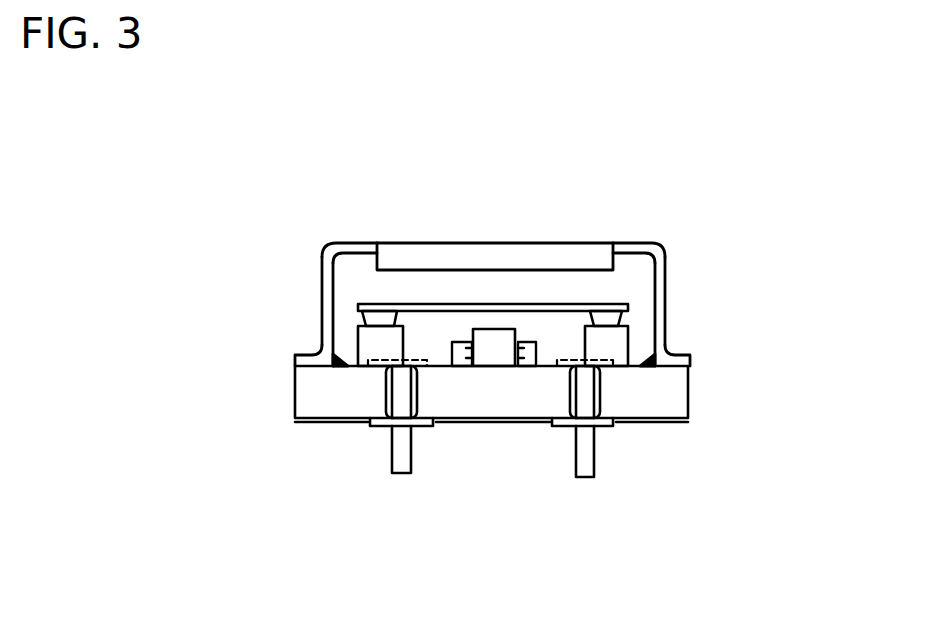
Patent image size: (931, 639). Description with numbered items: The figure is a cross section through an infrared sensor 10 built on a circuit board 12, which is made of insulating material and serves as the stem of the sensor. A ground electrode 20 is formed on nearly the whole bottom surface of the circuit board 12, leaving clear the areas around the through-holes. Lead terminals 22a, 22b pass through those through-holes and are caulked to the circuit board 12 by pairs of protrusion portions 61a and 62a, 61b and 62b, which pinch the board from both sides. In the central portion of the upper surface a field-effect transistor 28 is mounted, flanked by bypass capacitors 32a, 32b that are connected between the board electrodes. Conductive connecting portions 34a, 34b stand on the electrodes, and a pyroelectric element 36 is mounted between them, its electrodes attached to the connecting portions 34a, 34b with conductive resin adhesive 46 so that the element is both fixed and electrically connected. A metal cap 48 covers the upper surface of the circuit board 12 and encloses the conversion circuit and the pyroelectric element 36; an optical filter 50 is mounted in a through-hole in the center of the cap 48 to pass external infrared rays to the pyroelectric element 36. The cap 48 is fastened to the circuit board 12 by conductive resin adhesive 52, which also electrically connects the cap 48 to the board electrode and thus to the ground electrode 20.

The infrared sensor 10 is at (240, 142).
The circuit board 12 is at (688, 390).
The ground electrode 20 is at (313, 421).
The lead terminal 22a is at (397, 442).
The lead terminal 22b is at (593, 450).
The field-effect transistor 28 is at (488, 348).
The bypass capacitor 32a is at (455, 356).
The bypass capacitor 32b is at (534, 354).
The connecting part 34a is at (377, 337).
The connecting portion 34b is at (612, 343).
The pyroelectric element 36 is at (566, 305).
The conductive resin adhesive 46 is at (333, 312).
The cap 48 is at (652, 248).
The optical filter 50 is at (487, 256).
The conductive resin adhesive 52 is at (317, 350).
The protrusion portion 61a is at (383, 367).
The protrusion portion 61b is at (605, 372).
The protrusion portion 62a is at (370, 426).
The protrusion portion 62b is at (605, 427).